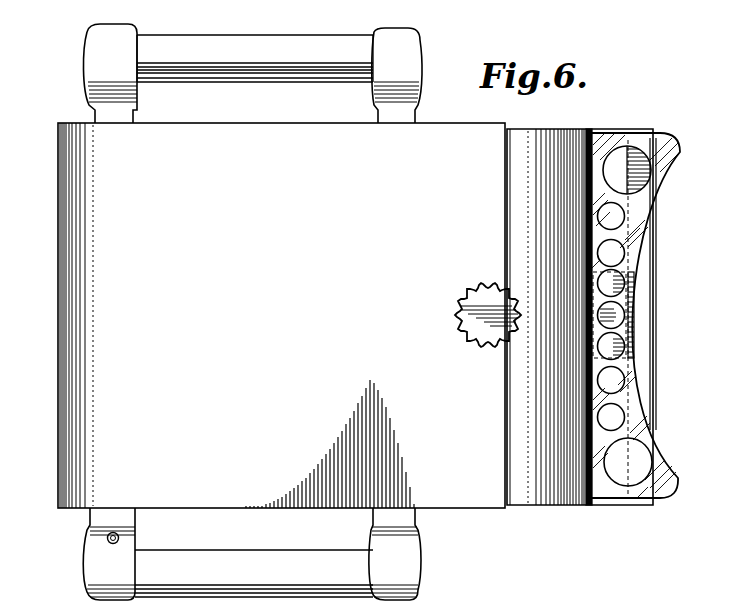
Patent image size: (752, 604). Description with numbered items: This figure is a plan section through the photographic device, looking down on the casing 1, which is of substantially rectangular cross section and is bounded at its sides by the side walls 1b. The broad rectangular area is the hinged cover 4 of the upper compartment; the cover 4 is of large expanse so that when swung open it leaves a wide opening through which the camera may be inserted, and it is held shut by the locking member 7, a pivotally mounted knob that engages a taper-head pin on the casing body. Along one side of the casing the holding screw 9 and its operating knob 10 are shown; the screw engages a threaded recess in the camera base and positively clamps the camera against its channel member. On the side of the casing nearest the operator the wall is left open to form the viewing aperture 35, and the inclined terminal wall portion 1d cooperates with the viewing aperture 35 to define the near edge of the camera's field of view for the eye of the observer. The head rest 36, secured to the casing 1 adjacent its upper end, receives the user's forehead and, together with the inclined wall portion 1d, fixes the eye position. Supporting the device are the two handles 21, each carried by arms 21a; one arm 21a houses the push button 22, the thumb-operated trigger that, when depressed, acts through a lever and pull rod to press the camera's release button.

The casing 1 is at (578, 505).
The sidewall 1b is at (557, 128).
The terminal wall portion 1d is at (653, 250).
The cover 4 is at (281, 315).
The locking member 7 is at (484, 289).
The holding screw 9 is at (604, 315).
The operating knob 10 is at (630, 294).
The handle 21 is at (240, 62).
The arm 21a is at (93, 90).
The push button 22 is at (120, 536).
The viewing aperture 35 is at (636, 375).
The head rest 36 is at (643, 203).